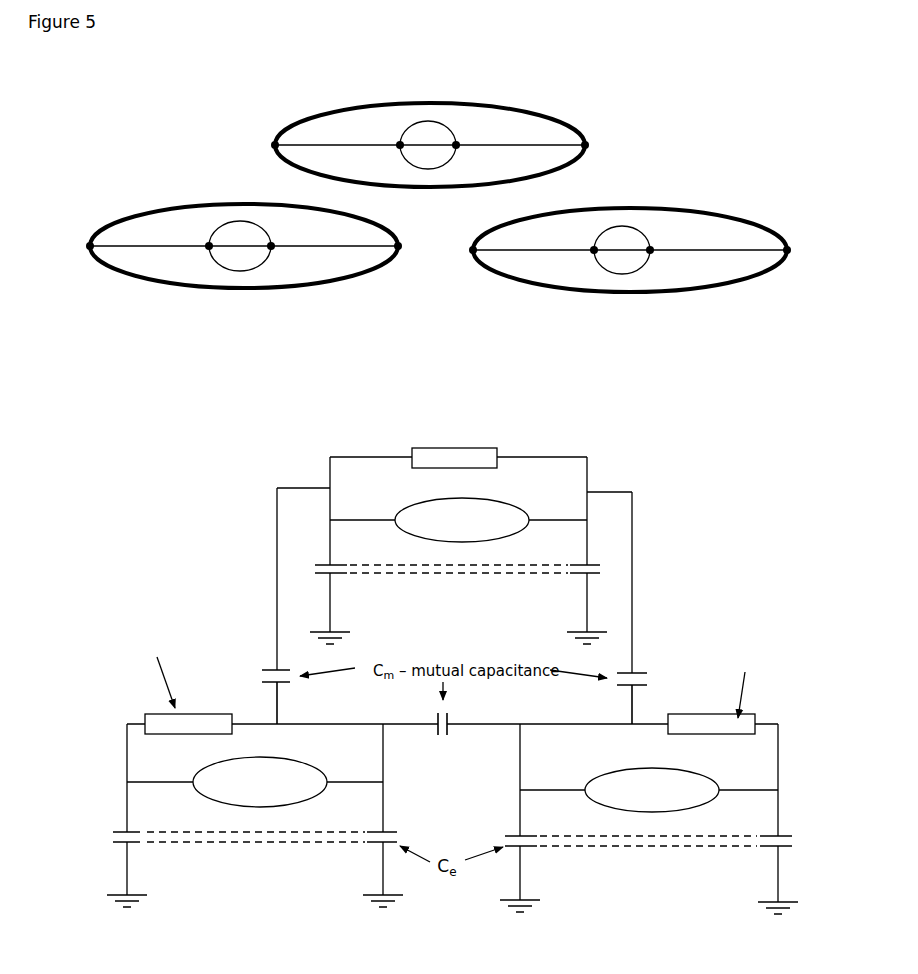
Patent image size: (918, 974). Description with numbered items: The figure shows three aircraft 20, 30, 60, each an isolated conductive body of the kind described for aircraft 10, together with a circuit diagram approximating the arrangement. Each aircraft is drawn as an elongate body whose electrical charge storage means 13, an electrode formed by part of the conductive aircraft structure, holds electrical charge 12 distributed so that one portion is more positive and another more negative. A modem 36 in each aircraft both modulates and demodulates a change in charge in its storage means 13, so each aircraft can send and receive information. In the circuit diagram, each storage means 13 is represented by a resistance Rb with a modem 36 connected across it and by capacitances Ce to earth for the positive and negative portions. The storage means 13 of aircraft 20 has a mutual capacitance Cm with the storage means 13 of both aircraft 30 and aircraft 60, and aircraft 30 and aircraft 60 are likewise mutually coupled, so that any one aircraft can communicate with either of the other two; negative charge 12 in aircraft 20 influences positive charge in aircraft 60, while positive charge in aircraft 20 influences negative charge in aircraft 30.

The aircraft 10 is at (397, 233).
The electrical charge 12 is at (316, 241).
The electrical charge storage means 13 is at (548, 135).
The aircraft 20 is at (449, 96).
The aircraft 30 is at (156, 198).
The modem 36 is at (429, 197).
The aircraft 60 is at (690, 201).